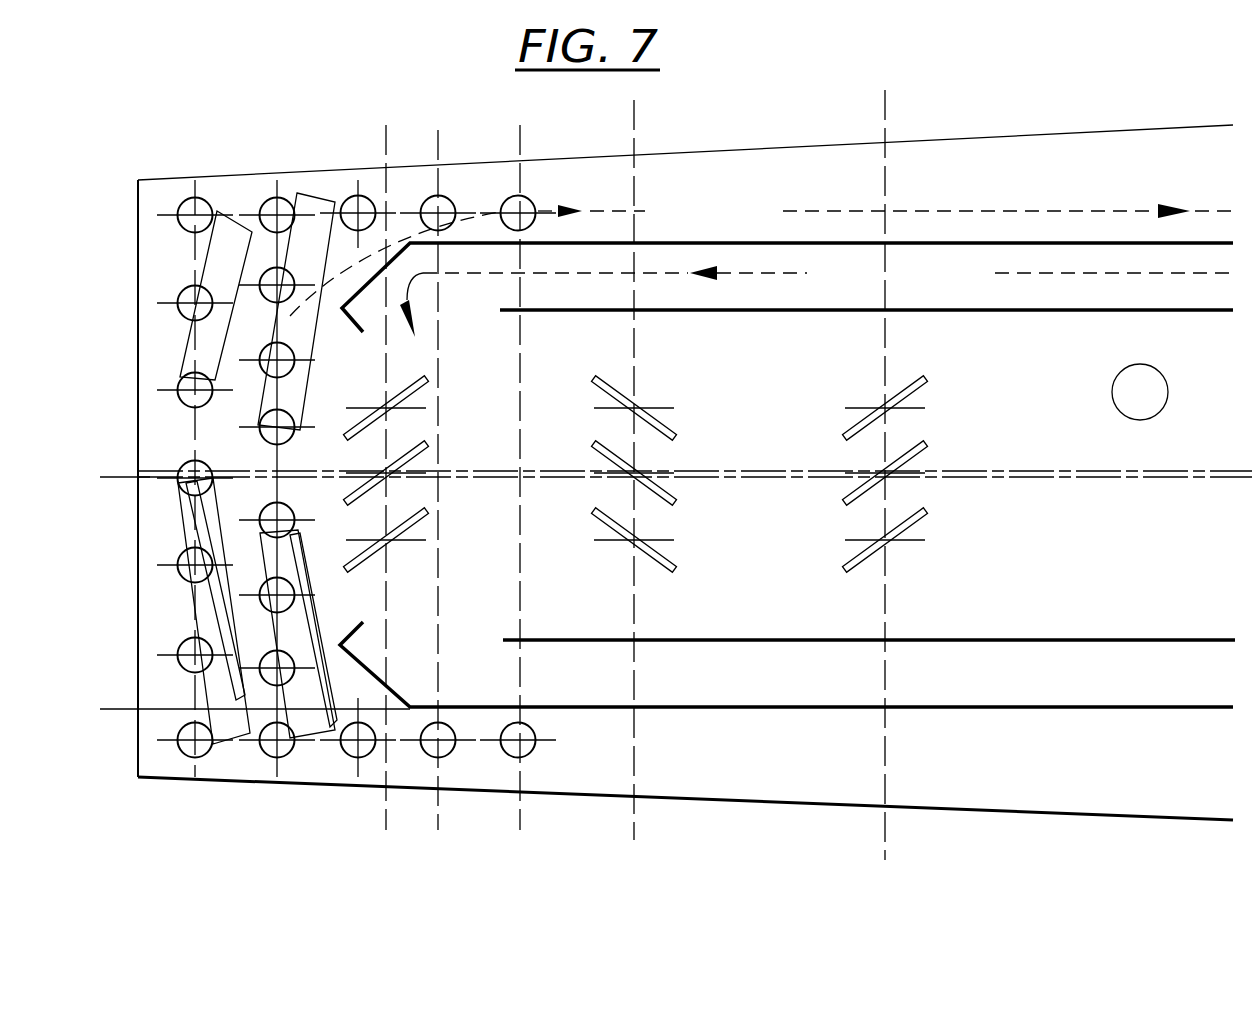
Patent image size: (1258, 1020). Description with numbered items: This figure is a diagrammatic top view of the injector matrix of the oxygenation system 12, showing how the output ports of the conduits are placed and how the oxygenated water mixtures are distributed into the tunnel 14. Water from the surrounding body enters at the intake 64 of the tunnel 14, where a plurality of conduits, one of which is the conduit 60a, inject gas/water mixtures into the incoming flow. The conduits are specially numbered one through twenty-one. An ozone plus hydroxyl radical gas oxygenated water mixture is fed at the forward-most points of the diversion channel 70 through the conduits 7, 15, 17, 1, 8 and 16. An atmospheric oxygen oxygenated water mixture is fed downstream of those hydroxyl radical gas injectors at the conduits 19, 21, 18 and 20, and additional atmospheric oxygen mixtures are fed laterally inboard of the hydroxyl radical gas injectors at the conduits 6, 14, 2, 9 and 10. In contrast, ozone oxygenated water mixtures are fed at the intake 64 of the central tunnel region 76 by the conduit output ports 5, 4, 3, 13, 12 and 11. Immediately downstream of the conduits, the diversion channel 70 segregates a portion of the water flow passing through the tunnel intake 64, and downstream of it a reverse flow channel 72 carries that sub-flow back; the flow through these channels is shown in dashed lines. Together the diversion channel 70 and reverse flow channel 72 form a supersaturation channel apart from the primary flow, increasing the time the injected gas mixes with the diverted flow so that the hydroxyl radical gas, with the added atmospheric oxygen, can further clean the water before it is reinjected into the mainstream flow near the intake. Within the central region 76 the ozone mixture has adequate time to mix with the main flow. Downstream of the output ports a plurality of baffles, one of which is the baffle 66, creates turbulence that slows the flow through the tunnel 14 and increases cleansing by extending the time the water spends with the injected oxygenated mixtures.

The oxygenation system 12 is at (766, 806).
The tunnel 14 is at (1086, 606).
The conduit 60a is at (190, 198).
The intake 64 is at (86, 458).
The baffle 66 is at (875, 408).
The diversion channel 70 is at (860, 178).
The reverse flow channel 72 is at (1102, 256).
The central region 76 is at (1140, 392).
The conduit 1 is at (193, 735).
The conduit 2 is at (192, 648).
The conduit 3 is at (192, 558).
The conduit 4 is at (192, 473).
The conduit 5 is at (192, 385).
The conduit 6 is at (192, 297).
The conduit 7 is at (192, 208).
The conduit 8 is at (273, 749).
The conduit 9 is at (277, 662).
The conduit 10 is at (273, 588).
The conduit 11 is at (270, 515).
The conduit 13 is at (269, 353).
The conduit 15 is at (269, 207).
The conduit 16 is at (350, 748).
The conduit 17 is at (350, 201).
The conduit 18 is at (429, 749).
The conduit 19 is at (429, 206).
The conduit 20 is at (512, 749).
The conduit 21 is at (512, 206).